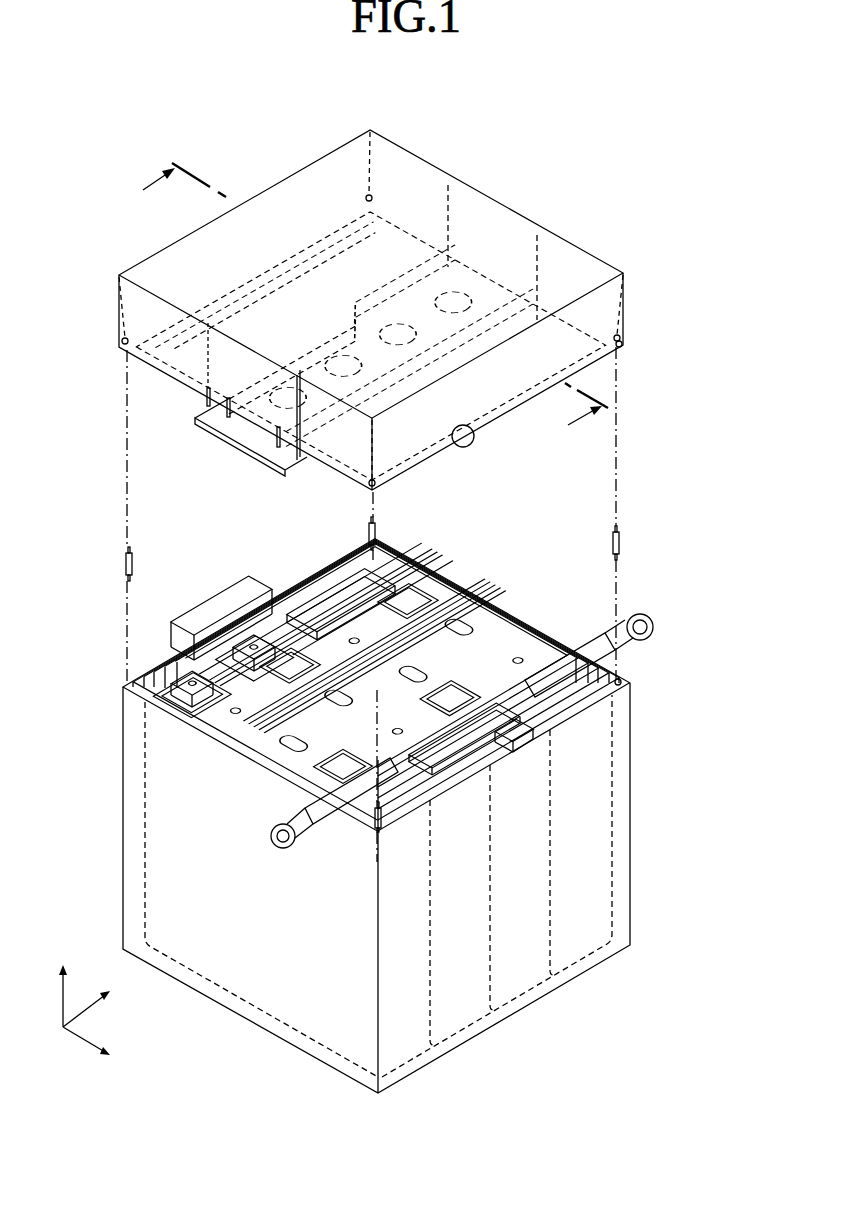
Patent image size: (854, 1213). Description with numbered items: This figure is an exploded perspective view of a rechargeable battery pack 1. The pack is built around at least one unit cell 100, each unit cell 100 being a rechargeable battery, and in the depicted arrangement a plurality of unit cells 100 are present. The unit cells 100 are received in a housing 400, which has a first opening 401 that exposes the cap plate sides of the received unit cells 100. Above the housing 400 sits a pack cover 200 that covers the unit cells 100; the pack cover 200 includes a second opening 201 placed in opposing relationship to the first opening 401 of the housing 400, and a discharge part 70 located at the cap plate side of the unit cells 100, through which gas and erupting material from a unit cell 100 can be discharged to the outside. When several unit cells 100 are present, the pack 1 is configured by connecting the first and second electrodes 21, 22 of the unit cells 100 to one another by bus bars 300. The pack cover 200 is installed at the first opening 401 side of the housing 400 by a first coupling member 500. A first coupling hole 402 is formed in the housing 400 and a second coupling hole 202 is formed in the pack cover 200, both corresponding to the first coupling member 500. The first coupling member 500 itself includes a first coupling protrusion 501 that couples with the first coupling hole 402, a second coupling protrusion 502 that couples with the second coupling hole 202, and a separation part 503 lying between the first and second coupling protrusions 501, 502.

The rechargeable battery pack 1 is at (256, 122).
The pack cover 200 is at (542, 208).
The second opening 201 is at (470, 444).
The second coupling hole 202 is at (622, 350).
The discharge part 70 is at (228, 452).
The bus bar 300 is at (248, 600).
The first electrode 21 is at (240, 637).
The second electrode 22 is at (462, 780).
The unit cell 100 is at (484, 598).
The housing 400 is at (630, 895).
The first opening 401 is at (578, 692).
The first coupling hole 402 is at (624, 683).
The first coupling member 500 is at (690, 509).
The first coupling protrusion 501 is at (620, 556).
The second coupling protrusion 502 is at (620, 528).
The separation part 503 is at (620, 546).